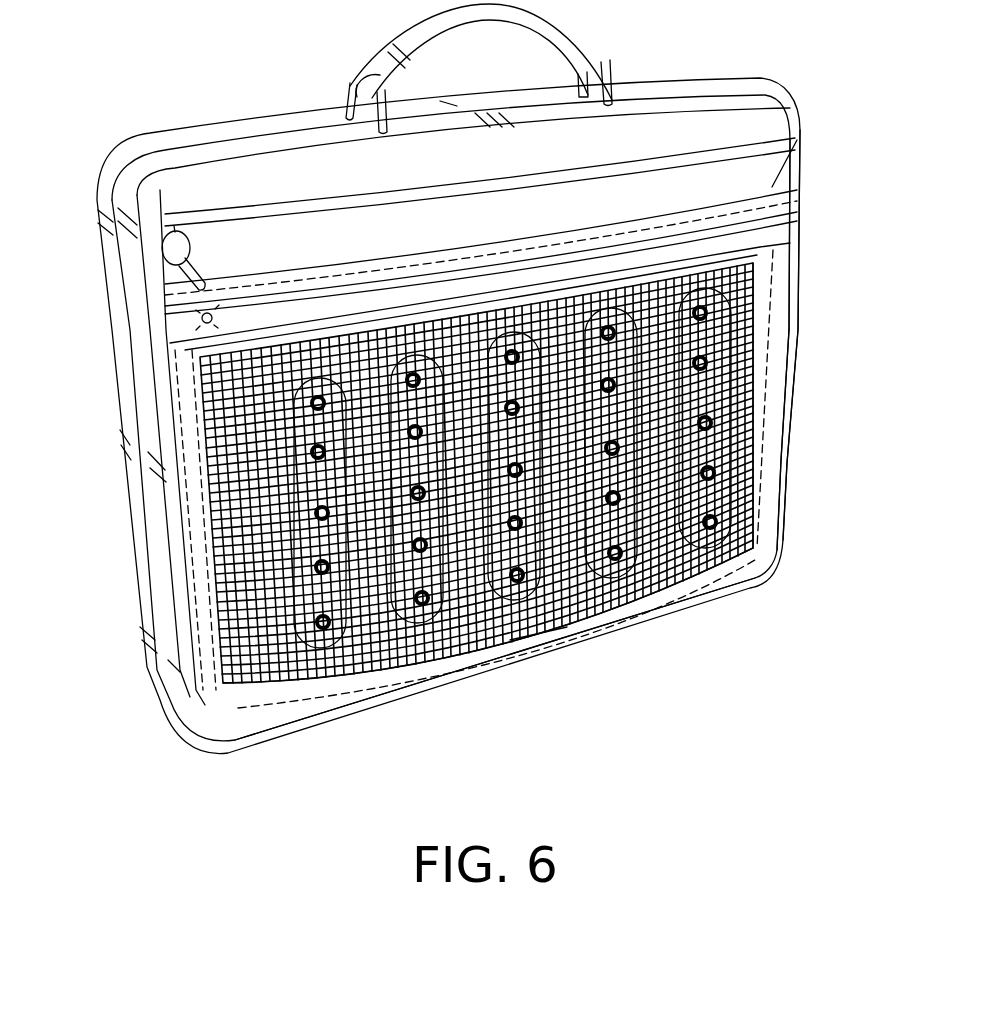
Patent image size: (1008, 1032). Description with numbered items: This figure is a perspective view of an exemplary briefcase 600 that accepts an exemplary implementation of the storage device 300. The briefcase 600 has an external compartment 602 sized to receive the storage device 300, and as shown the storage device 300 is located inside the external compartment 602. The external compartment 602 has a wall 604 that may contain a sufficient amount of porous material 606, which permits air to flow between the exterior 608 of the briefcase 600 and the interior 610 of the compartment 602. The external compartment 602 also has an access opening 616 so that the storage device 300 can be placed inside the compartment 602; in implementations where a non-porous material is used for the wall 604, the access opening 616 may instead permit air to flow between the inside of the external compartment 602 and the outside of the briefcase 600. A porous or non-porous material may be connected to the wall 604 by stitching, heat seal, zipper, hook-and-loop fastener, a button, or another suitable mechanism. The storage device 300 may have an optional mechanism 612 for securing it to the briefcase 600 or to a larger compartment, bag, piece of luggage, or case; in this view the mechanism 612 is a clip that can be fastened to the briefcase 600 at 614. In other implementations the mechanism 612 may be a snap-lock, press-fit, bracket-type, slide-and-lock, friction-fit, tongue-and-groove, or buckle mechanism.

The briefcase 600 is at (160, 765).
The external compartment 602 is at (780, 311).
The wall 604 is at (787, 418).
The porous material 606 is at (210, 523).
The exterior 608 is at (747, 587).
The interior 610 is at (753, 470).
The mechanism 612 is at (163, 263).
The fastening location 614 is at (160, 207).
The access opening 616 is at (800, 132).
The storage device 300 is at (203, 443).